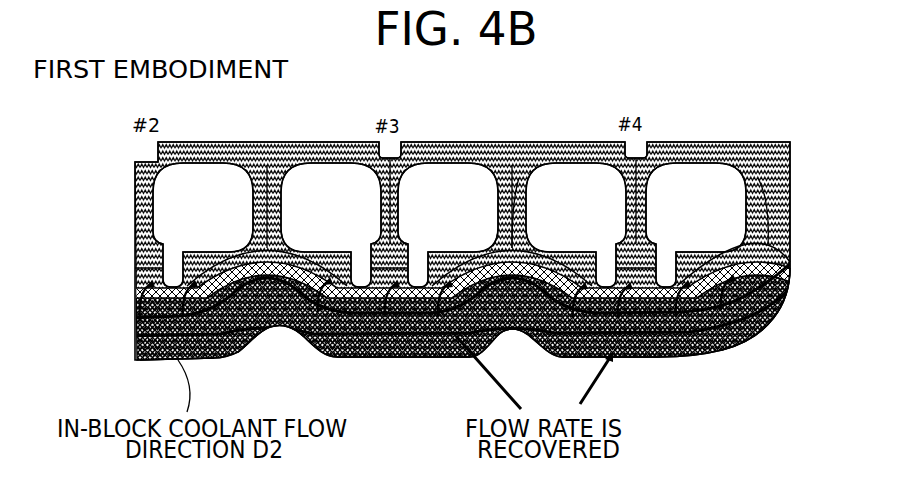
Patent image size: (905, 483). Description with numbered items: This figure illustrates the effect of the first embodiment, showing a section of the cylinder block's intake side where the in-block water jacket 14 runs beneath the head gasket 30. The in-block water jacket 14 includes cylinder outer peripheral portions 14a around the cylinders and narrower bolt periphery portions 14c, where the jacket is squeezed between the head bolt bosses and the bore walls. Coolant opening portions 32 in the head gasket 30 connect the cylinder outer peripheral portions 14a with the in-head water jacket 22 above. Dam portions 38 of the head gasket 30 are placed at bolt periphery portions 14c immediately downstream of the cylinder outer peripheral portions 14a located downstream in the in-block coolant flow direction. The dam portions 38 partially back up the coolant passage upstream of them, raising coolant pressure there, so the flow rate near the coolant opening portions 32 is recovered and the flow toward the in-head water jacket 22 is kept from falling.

The in-head water jacket 22 is at (693, 143).
The coolant opening portions 32 is at (184, 235).
The dam portions 38 is at (519, 178).
The in-block water jacket 14 is at (707, 359).
The cylinder outer peripheral portions 14a is at (158, 362).
The bolt periphery portions 14c is at (268, 331).
The head gasket 30 is at (510, 331).